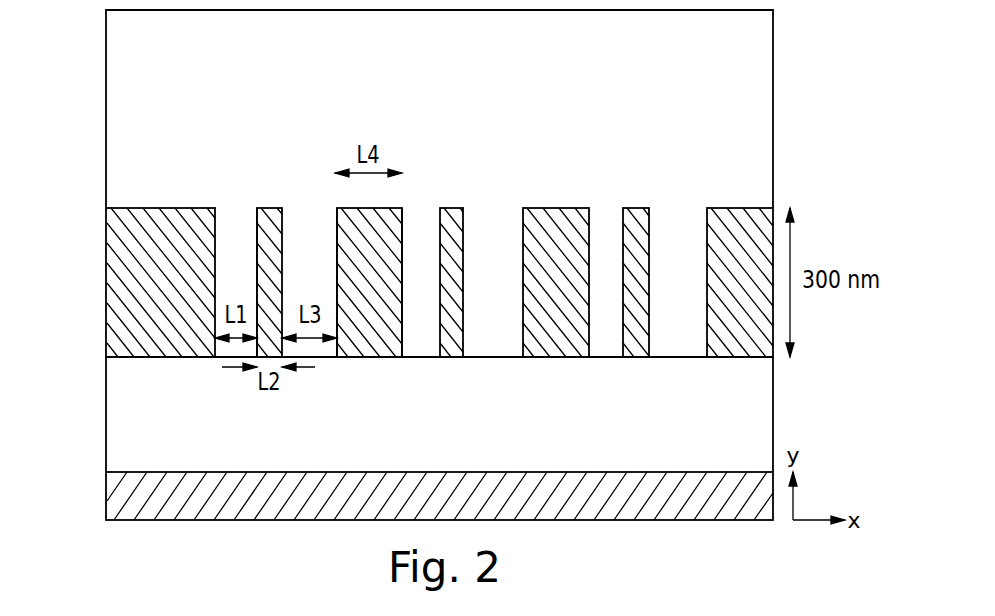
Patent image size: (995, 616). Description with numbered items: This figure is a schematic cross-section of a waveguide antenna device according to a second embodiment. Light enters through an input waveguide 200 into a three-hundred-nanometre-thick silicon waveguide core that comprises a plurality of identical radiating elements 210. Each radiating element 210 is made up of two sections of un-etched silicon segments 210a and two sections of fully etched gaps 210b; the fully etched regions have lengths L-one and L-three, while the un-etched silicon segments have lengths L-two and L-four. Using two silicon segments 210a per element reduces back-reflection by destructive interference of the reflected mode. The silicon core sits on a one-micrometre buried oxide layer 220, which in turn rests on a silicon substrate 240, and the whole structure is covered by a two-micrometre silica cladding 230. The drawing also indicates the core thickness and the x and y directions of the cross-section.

The input waveguide 200 is at (441, 265).
The radiating elements 210 is at (222, 72).
The un-etched silicon segments 210a is at (259, 208).
The fully etched gaps 210b is at (235, 284).
The buried oxide layer 220 is at (773, 408).
The silica cladding 230 is at (773, 75).
The silicon substrate 240 is at (106, 494).